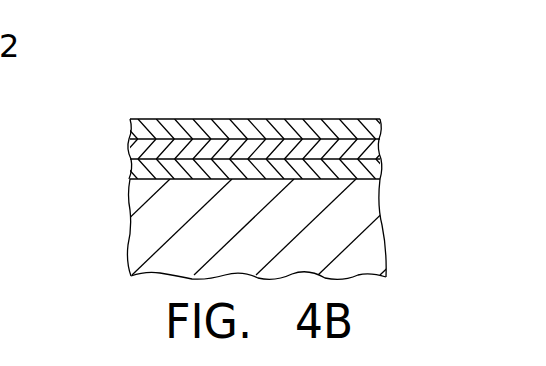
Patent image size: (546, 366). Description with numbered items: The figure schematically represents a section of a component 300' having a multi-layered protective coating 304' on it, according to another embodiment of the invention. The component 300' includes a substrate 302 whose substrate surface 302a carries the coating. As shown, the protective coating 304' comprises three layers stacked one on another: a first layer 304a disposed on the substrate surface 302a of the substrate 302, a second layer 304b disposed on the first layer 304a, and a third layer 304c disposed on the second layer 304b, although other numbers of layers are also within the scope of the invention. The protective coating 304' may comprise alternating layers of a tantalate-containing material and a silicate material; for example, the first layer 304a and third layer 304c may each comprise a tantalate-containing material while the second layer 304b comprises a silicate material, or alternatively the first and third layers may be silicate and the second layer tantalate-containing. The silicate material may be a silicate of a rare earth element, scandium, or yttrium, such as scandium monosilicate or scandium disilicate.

The component 300' is at (251, 153).
The substrate 302 is at (405, 242).
The substrate surface 302a is at (358, 189).
The multi-layered protective coating 304' is at (251, 150).
The first layer 304a is at (116, 177).
The second layer 304b is at (116, 148).
The third layer 304c is at (116, 122).